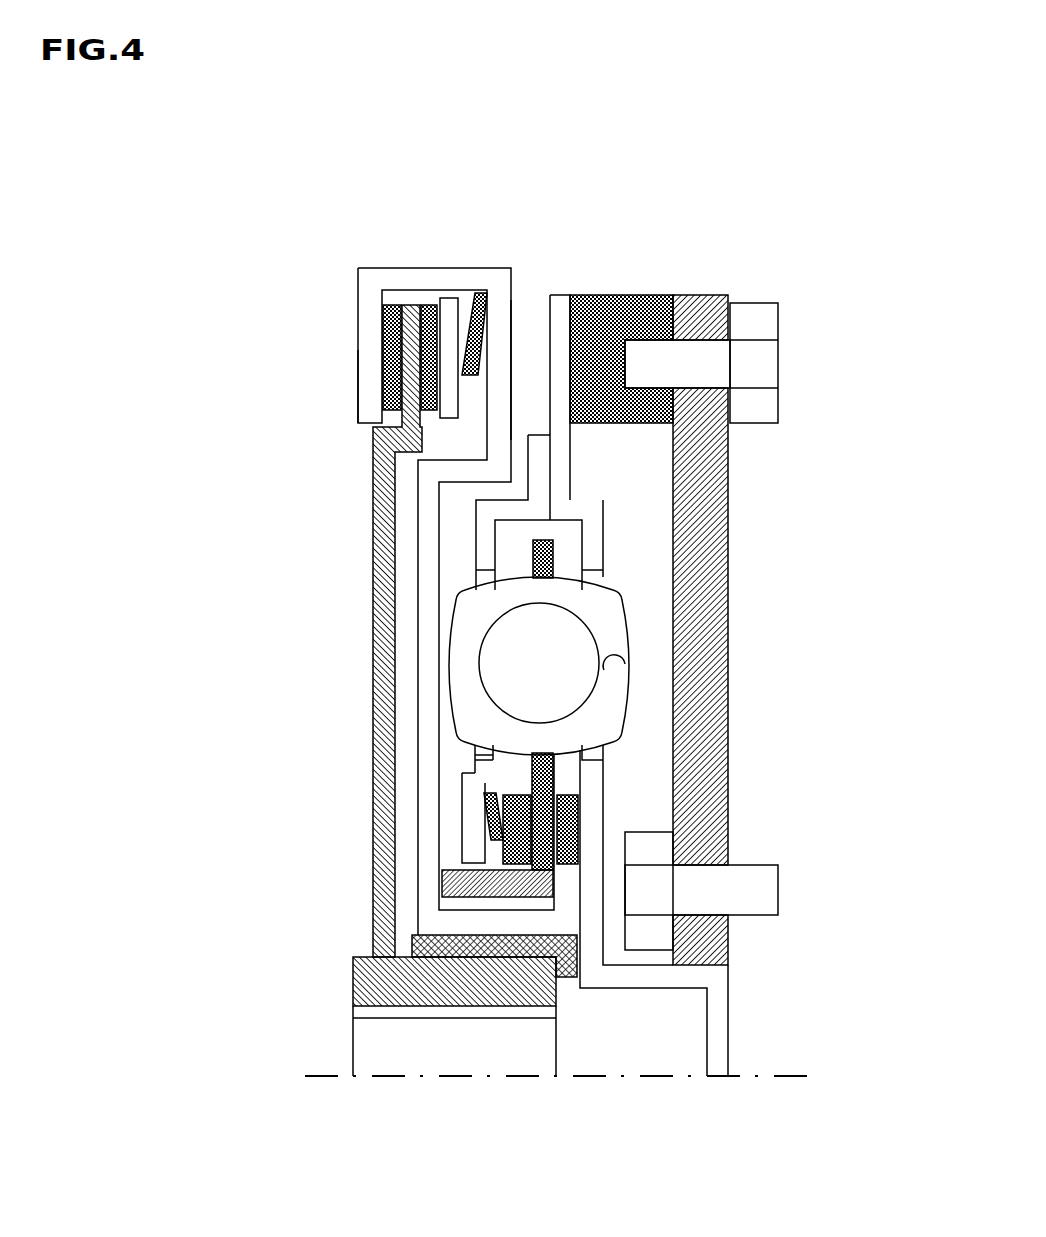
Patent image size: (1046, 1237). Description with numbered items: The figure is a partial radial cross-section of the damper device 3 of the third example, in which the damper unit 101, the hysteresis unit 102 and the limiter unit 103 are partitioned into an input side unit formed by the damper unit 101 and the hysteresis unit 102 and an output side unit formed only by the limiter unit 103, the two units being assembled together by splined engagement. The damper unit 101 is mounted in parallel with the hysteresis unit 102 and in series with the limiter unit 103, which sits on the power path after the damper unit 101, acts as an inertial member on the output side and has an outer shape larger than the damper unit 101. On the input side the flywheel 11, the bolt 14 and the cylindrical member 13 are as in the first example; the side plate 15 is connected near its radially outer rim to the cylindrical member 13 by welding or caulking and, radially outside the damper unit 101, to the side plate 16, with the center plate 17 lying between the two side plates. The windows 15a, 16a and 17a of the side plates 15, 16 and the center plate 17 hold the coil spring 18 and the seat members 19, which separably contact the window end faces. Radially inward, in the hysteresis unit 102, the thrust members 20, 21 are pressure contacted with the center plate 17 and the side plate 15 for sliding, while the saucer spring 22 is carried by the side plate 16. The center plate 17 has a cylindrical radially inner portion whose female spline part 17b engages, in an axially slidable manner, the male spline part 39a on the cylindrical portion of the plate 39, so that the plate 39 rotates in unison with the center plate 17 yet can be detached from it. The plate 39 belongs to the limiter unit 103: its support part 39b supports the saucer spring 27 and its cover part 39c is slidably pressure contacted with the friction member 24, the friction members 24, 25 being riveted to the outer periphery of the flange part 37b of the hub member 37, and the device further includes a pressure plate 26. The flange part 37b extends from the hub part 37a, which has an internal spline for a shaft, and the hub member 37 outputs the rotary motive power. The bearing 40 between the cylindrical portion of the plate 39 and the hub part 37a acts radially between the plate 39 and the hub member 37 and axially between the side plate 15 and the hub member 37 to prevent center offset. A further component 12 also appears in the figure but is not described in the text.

The damper device 3 is at (816, 236).
The flywheel 11 is at (730, 463).
The lower pin 12 is at (765, 893).
The cylindrical member 13 is at (621, 310).
The bolt 14 is at (763, 367).
The side plate 15 is at (592, 519).
The window 15a is at (603, 572).
The side plate 16 is at (483, 525).
The window 16a is at (483, 577).
The center plate 17 is at (560, 782).
The window 17a is at (555, 755).
The internal spline part 17b is at (490, 890).
The coil spring 18 is at (615, 672).
The seat member 19 is at (612, 598).
The thrust member 20 is at (583, 814).
The thrust member 21 is at (462, 855).
The saucer spring 22 is at (483, 818).
The friction member 24 is at (390, 333).
The friction member 25 is at (437, 305).
The pressure plate 26 is at (452, 303).
The saucer spring 27 is at (475, 293).
The hub member 37 is at (353, 1003).
The hub part 37a is at (353, 980).
The flange part 37b is at (380, 715).
The plate 39 is at (427, 653).
The external spline part 39a is at (487, 913).
The support part 39b is at (498, 333).
The cover part 39c is at (370, 397).
The bearing 40 is at (565, 978).
The damper unit 101 is at (660, 654).
The hysteresis unit 102 is at (623, 833).
The limiter unit 103 is at (334, 364).